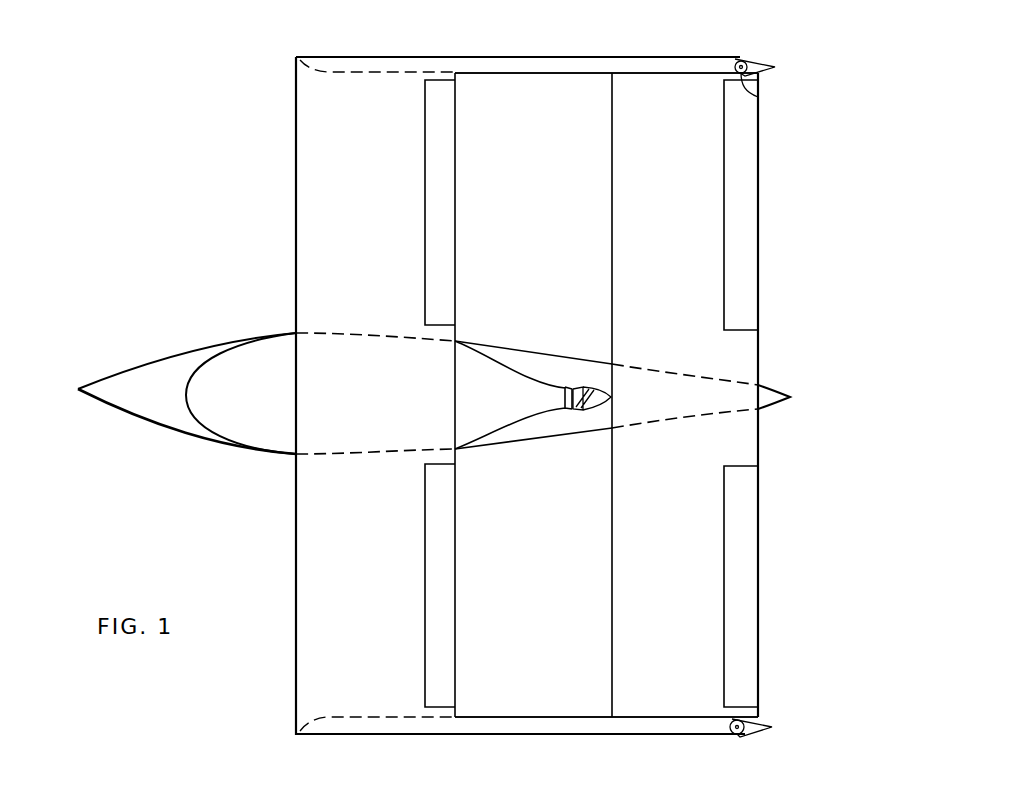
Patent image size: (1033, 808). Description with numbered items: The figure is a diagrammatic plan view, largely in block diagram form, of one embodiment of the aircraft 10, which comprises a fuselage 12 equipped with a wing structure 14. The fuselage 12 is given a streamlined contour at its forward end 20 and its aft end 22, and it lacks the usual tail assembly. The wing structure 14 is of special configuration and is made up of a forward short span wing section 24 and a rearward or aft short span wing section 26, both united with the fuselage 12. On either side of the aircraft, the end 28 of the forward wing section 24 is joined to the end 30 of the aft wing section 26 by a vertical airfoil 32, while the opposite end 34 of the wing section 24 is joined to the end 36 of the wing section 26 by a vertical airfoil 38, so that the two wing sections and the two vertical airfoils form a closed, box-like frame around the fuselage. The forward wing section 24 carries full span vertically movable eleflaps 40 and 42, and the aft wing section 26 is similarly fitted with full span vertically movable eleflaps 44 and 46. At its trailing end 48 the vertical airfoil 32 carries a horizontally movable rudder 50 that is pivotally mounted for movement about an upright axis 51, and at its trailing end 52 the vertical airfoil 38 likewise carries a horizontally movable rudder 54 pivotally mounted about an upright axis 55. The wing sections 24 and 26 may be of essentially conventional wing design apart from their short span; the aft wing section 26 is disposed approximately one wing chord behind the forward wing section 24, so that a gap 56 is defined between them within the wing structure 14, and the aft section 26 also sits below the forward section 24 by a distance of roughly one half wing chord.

The aircraft 10 is at (800, 58).
The fuselage 12 is at (200, 458).
The wing structure 14 is at (282, 754).
The forward end 20 is at (98, 365).
The aft end 22 is at (800, 380).
The forward short span wing section 24 is at (325, 632).
The aft short span wing section 26 is at (673, 120).
The end of wing section 24 28 is at (376, 702).
The end of wing section 26 30 is at (663, 697).
The vertical airfoil 32 is at (540, 728).
The end of wing section 24 34 is at (393, 93).
The end of wing section 26 36 is at (640, 88).
The vertical airfoil 38 is at (542, 60).
The eleflap 40 is at (443, 598).
The eleflap 42 is at (447, 236).
The eleflap 44 is at (740, 596).
The eleflap 46 is at (745, 232).
The trailing end 48 is at (727, 734).
The rudder 50 is at (758, 735).
The upright axis 51 is at (750, 722).
The trailing end 52 is at (723, 62).
The rudder 54 is at (762, 62).
The upright axis 55 is at (758, 97).
The gap 56 is at (508, 123).